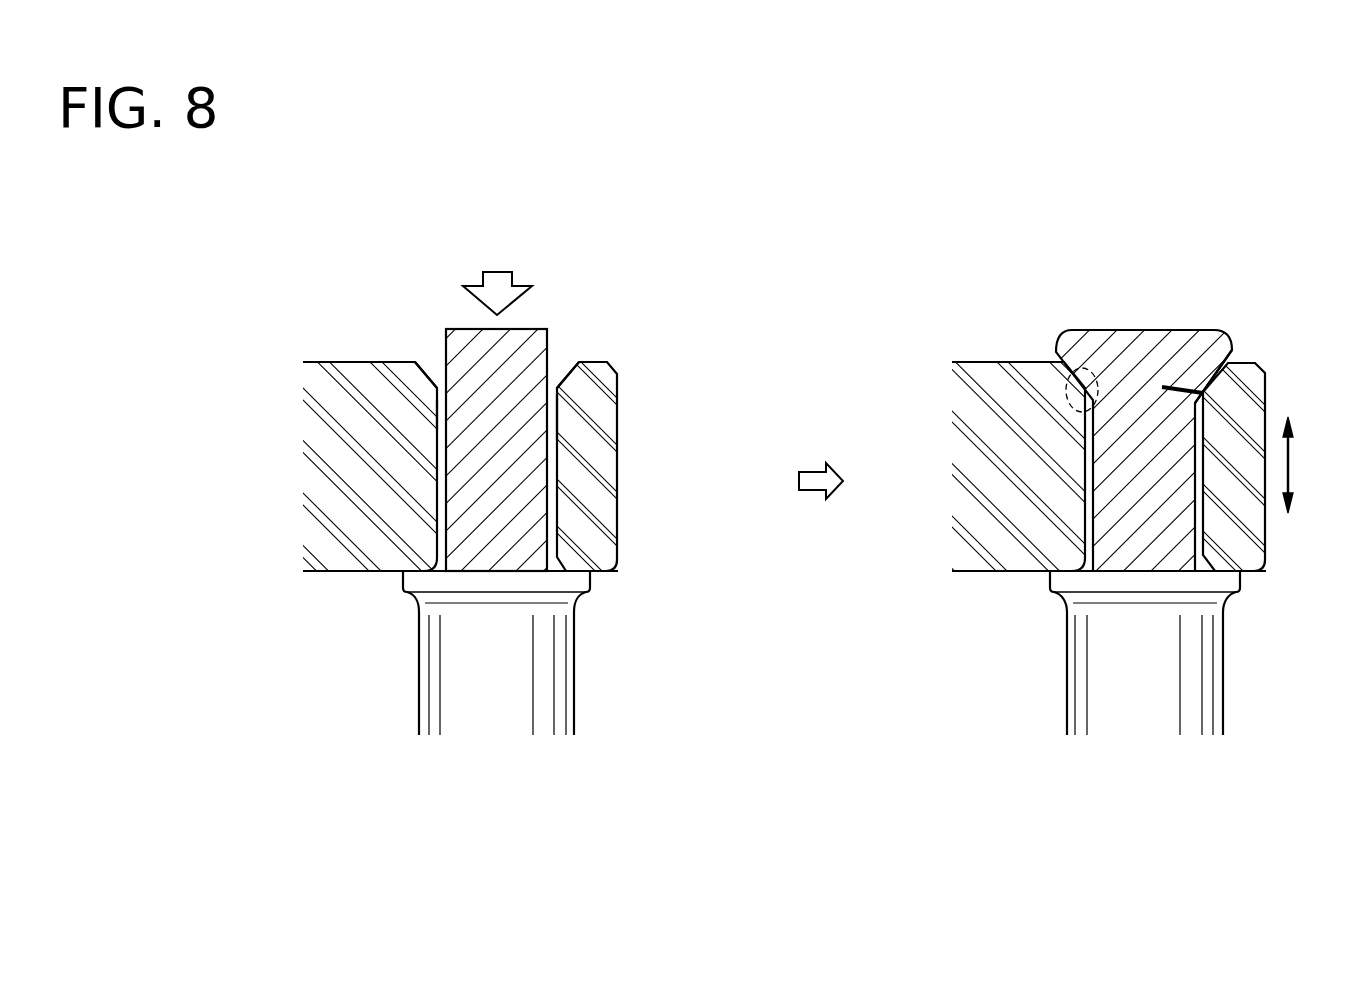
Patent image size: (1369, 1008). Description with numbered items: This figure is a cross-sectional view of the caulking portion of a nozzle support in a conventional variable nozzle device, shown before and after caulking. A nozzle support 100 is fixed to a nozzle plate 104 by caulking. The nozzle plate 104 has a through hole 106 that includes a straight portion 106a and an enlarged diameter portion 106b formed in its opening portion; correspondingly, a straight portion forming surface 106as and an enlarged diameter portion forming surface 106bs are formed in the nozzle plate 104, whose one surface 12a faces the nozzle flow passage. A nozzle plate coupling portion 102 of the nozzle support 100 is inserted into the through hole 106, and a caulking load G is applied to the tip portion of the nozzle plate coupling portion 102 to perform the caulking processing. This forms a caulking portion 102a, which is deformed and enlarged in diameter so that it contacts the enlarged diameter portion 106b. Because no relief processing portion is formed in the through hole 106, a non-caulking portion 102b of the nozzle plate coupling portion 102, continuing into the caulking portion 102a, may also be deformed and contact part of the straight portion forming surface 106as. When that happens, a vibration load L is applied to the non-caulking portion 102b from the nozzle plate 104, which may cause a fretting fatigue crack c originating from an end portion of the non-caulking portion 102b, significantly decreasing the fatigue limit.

The nozzle support 100 is at (574, 685).
The nozzle plate coupling portion 102 is at (530, 510).
The caulking portion 102a is at (1155, 340).
The non-caulking portion 102b is at (1090, 372).
The nozzle plate 104 is at (365, 362).
The through hole 106 is at (213, 382).
The straight portion 106a is at (442, 415).
The enlarged diameter portion 106b is at (435, 370).
The straight portion forming surface 106as is at (556, 428).
The enlarged diameter portion forming surface 106bs is at (555, 387).
The caulking load G is at (513, 281).
The fretting fatigue crack c is at (1175, 382).
The vibration load L is at (1290, 465).
The one surface of the nozzle plate 12a is at (977, 575).